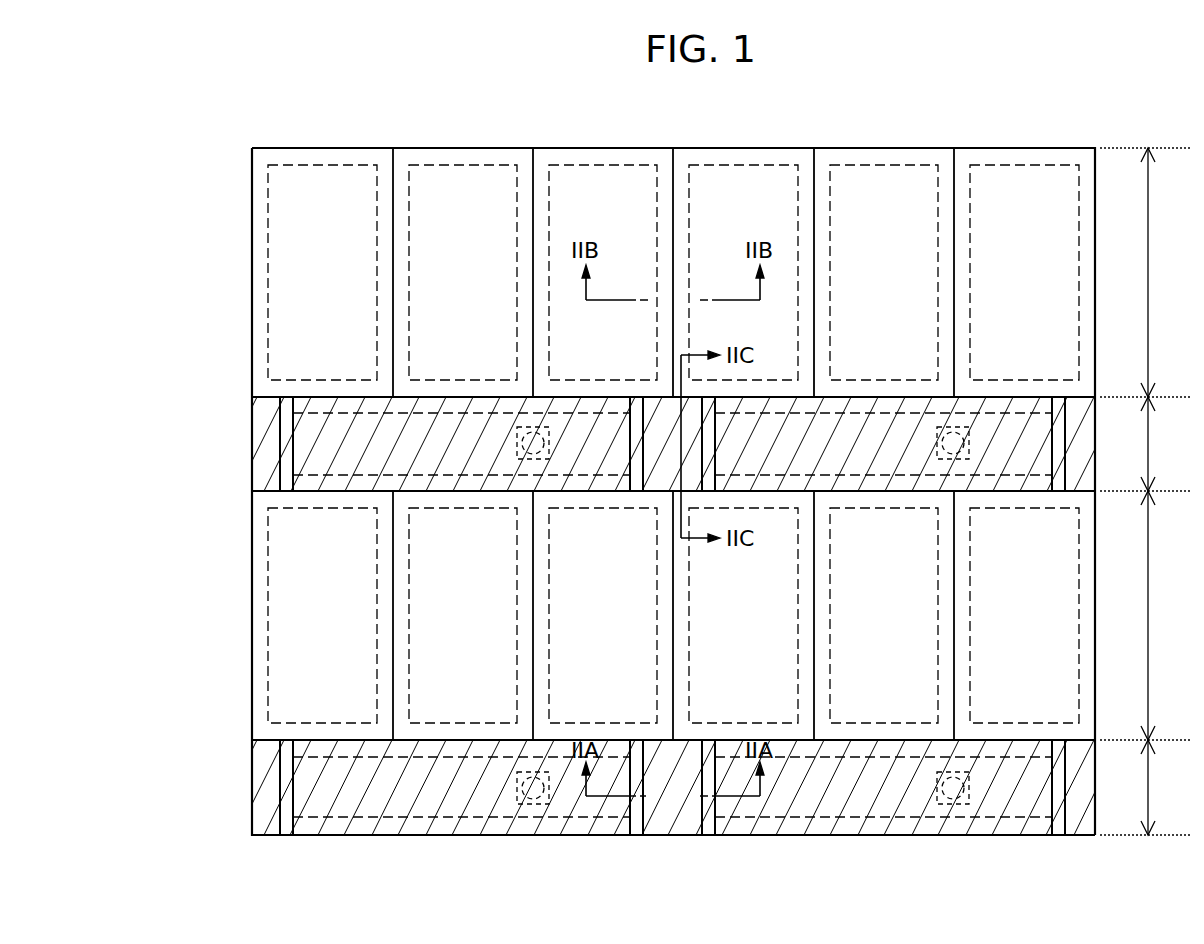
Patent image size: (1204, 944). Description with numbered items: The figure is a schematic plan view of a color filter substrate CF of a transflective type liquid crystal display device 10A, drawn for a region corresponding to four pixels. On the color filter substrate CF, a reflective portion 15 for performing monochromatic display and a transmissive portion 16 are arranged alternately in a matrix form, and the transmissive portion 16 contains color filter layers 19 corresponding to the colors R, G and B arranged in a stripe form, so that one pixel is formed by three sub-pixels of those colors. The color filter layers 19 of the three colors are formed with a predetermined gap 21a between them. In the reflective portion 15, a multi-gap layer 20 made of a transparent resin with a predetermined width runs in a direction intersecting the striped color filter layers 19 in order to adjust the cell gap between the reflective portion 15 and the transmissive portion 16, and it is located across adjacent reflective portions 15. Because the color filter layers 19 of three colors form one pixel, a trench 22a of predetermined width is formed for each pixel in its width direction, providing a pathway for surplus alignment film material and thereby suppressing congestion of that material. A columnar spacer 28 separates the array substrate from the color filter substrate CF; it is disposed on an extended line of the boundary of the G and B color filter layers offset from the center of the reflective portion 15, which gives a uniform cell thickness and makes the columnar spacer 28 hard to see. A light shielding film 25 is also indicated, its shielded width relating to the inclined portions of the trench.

The transflective type liquid crystal display device 10A is at (791, 104).
The color filter substrate CF is at (1060, 148).
The color filter layer 19 is at (293, 298).
The multi-gap layer 20 is at (315, 442).
The gap 21a is at (673, 178).
The trench 22a is at (678, 770).
The light shielding film 25 is at (290, 156).
The columnar spacer 28 is at (538, 806).
The transmissive portion 16 is at (1145, 444).
The reflective portion 15 is at (1145, 616).